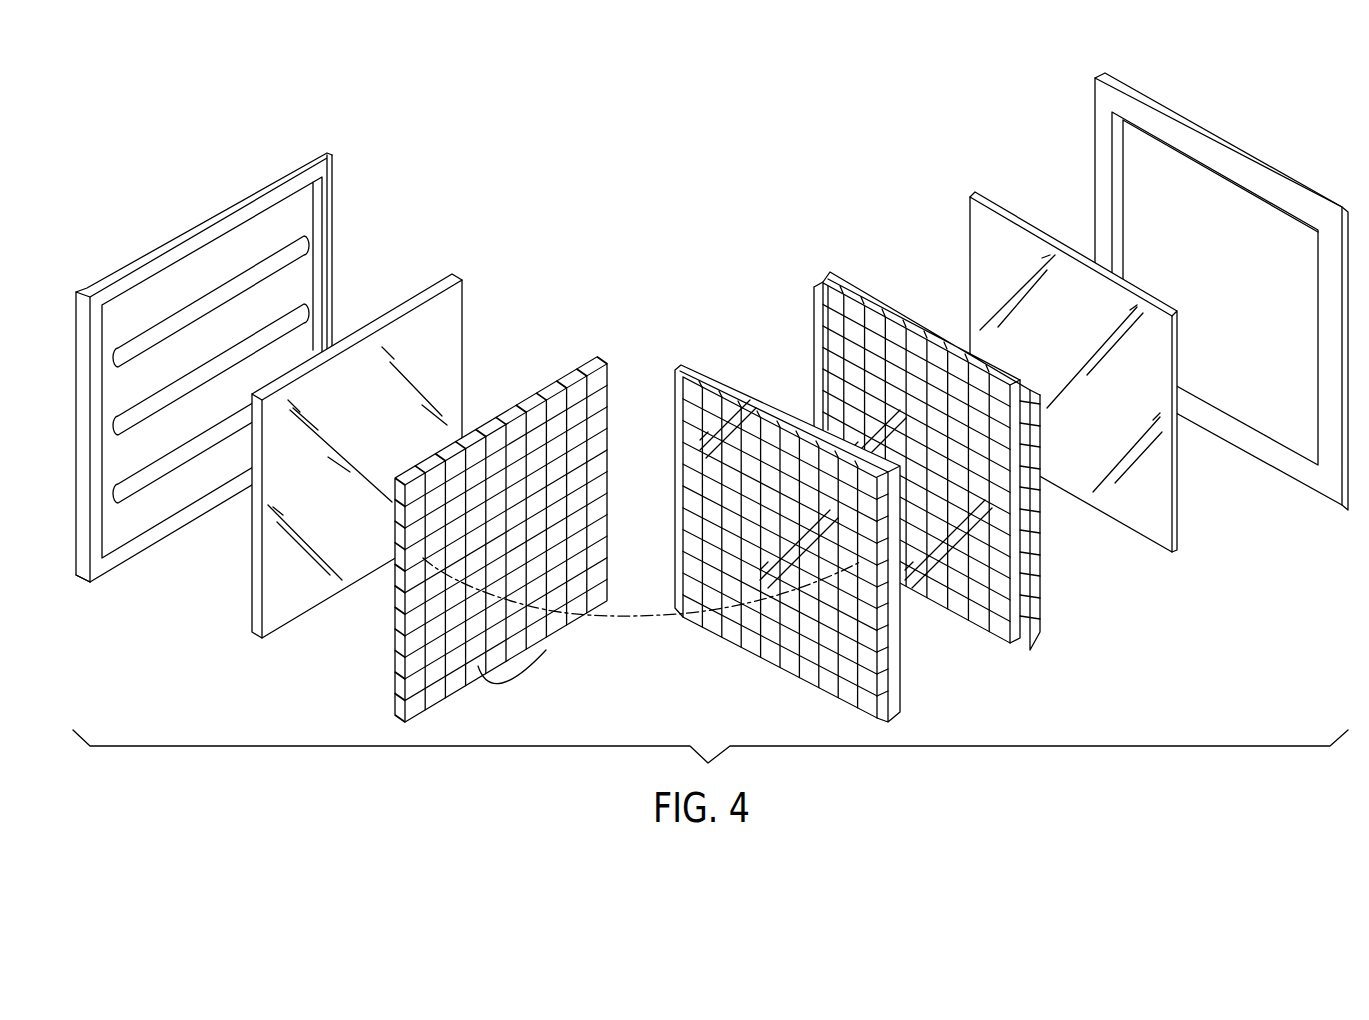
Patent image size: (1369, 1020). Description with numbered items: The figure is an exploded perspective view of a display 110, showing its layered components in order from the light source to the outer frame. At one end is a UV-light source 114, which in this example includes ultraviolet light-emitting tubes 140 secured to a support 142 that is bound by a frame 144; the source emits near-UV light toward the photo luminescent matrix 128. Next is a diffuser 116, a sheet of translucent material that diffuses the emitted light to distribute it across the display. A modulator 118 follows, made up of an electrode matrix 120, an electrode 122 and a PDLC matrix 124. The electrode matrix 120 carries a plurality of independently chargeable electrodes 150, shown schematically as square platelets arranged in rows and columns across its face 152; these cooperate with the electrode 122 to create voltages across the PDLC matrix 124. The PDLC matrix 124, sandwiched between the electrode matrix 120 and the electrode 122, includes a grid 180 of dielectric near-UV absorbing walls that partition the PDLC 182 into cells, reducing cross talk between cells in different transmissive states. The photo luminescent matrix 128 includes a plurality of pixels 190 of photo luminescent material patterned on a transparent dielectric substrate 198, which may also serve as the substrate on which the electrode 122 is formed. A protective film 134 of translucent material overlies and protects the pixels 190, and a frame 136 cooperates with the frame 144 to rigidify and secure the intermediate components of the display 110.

The display 110 is at (506, 144).
The UV-light source 114 is at (200, 336).
The diffuser 116 is at (458, 265).
The modulator 118 is at (525, 519).
The electrode matrix 120 is at (588, 365).
The electrode 122 is at (820, 290).
The PDLC matrix 124 is at (787, 527).
The photo luminescent matrix 128 is at (900, 453).
The protective film 134 is at (1004, 207).
The frame 136 is at (1143, 93).
The ultraviolet light-emitting tubes 140 is at (180, 387).
The support 142 is at (197, 268).
The frame 144 is at (312, 158).
The electrodes 150 is at (508, 687).
The face 152 is at (506, 543).
The grid 180 is at (783, 643).
The PDLC 182 is at (830, 677).
The pixels 190 is at (1000, 610).
The substrate 198 is at (830, 288).